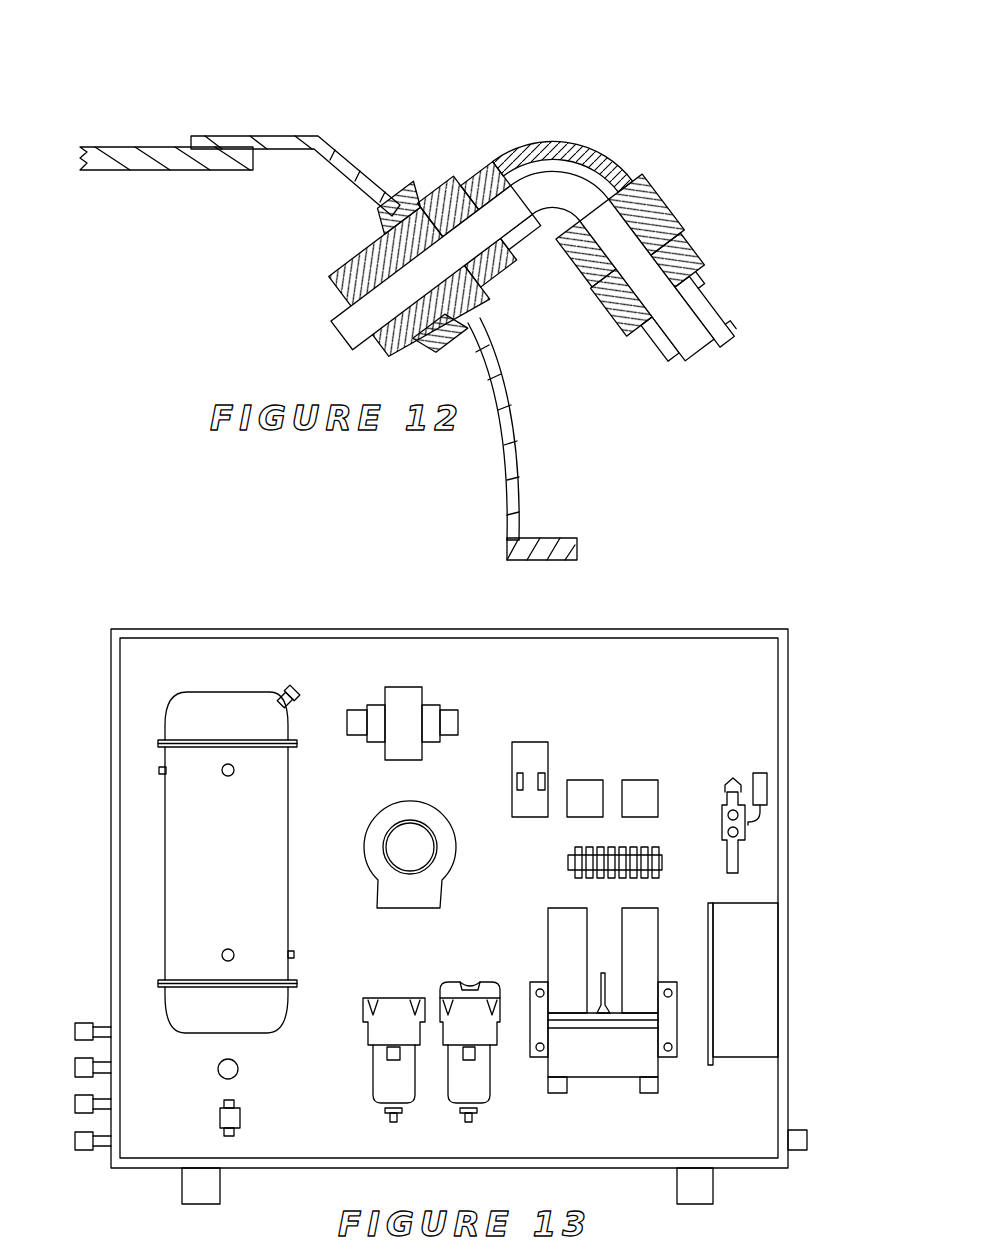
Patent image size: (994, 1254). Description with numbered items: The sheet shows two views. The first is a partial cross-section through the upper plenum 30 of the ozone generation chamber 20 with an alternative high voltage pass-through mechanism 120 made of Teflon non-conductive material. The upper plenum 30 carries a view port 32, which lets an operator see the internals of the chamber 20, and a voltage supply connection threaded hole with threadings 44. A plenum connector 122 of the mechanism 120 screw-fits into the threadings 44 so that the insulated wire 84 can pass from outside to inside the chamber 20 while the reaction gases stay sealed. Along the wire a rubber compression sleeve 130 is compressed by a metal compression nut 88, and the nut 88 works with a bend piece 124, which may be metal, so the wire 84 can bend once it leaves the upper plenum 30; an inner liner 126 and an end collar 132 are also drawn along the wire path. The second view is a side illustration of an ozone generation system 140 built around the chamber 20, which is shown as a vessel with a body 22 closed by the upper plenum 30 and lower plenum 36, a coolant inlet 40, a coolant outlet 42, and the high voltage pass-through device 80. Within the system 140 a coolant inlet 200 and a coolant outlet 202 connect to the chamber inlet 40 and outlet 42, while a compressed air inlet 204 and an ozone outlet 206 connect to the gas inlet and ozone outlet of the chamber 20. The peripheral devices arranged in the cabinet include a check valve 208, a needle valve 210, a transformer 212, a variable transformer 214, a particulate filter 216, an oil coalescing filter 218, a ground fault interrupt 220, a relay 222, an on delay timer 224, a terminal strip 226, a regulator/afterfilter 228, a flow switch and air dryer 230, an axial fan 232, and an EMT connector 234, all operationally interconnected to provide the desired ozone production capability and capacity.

In FIG. 12, the high voltage pass-through mechanism 120 is at (532, 47).
In FIG. 12, the view port 32 is at (122, 147).
In FIG. 12, the upper plenum 30 is at (245, 137).
In FIG. 13, the upper plenum 30 is at (177, 702).
In FIG. 12, the voltage supply connection threaded hole 44 is at (463, 187).
In FIG. 12, the plenum connector 122 is at (470, 165).
In FIG. 12, the inner tube 126 is at (520, 233).
In FIG. 12, the bend piece 124 is at (593, 153).
In FIG. 12, the insulated wire 84 is at (613, 220).
In FIG. 12, the metal compression nut 88 is at (680, 230).
In FIG. 12, the collar 132 is at (700, 287).
In FIG. 12, the rubber compression sleeve 130 is at (610, 287).
In FIG. 13, the ozone generation system 140 is at (206, 580).
In FIG. 13, the tank 22 is at (165, 858).
In FIG. 13, the lower plenum 36 is at (172, 1015).
In FIG. 13, the coolant inlet 40 is at (160, 770).
In FIG. 13, the coolant outlet 42 is at (290, 957).
In FIG. 13, the high voltage pass-through 80 is at (293, 692).
In FIG. 13, the ozone generation chamber 20 is at (303, 843).
In FIG. 13, the transformer 212 is at (450, 713).
In FIG. 13, the variable transformer 214 is at (407, 805).
In FIG. 13, the ground fault interrupt 220 is at (532, 742).
In FIG. 13, the relay 222 is at (585, 780).
In FIG. 13, the on delay timer 224 is at (640, 780).
In FIG. 13, the terminal strip 226 is at (570, 852).
In FIG. 13, the flow switch 230 is at (570, 907).
In FIG. 13, the regulator/afterfilter 228 is at (735, 863).
In FIG. 13, the axial fan 232 is at (750, 987).
In FIG. 13, the particulate filter 216 is at (390, 998).
In FIG. 13, the oil coalescing filter 218 is at (467, 982).
In FIG. 13, the needle valve 210 is at (235, 1065).
In FIG. 13, the check valve 208 is at (235, 1118).
In FIG. 13, the coolant inlet 200 is at (73, 1028).
In FIG. 13, the coolant outlet 202 is at (73, 1067).
In FIG. 13, the compressed air inlet 204 is at (73, 1102).
In FIG. 13, the ozone outlet 206 is at (73, 1140).
In FIG. 13, the EMT connector 234 is at (803, 1133).